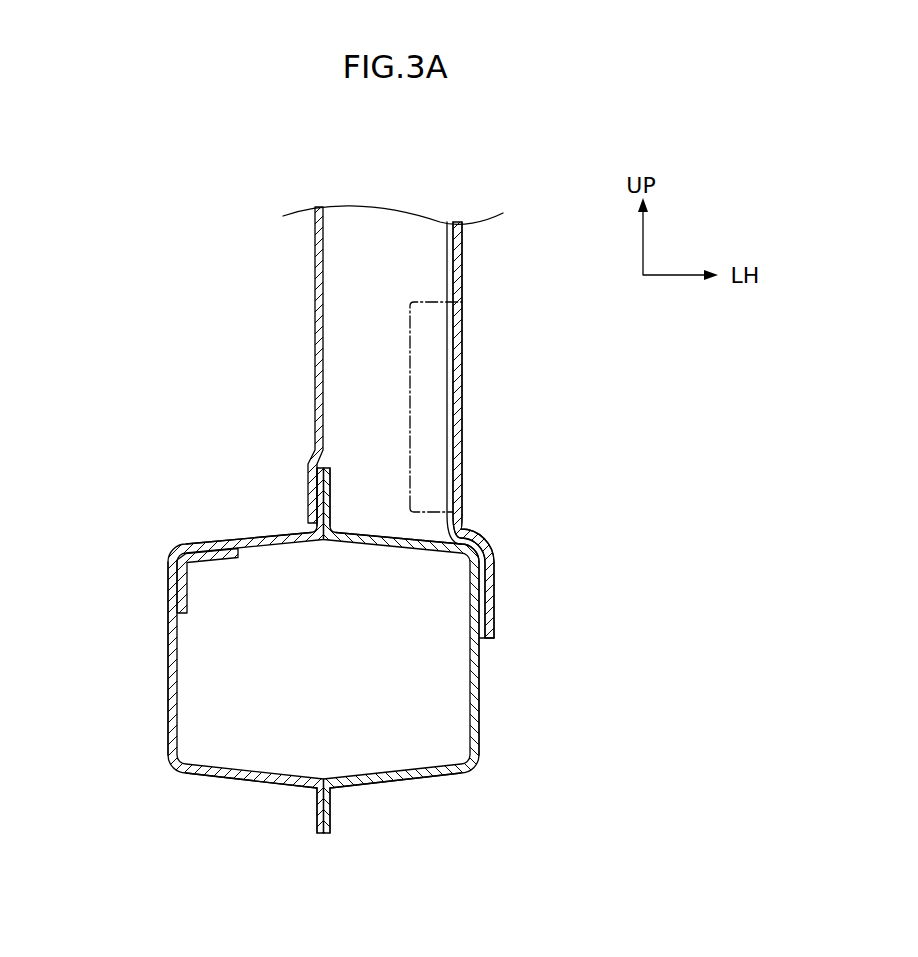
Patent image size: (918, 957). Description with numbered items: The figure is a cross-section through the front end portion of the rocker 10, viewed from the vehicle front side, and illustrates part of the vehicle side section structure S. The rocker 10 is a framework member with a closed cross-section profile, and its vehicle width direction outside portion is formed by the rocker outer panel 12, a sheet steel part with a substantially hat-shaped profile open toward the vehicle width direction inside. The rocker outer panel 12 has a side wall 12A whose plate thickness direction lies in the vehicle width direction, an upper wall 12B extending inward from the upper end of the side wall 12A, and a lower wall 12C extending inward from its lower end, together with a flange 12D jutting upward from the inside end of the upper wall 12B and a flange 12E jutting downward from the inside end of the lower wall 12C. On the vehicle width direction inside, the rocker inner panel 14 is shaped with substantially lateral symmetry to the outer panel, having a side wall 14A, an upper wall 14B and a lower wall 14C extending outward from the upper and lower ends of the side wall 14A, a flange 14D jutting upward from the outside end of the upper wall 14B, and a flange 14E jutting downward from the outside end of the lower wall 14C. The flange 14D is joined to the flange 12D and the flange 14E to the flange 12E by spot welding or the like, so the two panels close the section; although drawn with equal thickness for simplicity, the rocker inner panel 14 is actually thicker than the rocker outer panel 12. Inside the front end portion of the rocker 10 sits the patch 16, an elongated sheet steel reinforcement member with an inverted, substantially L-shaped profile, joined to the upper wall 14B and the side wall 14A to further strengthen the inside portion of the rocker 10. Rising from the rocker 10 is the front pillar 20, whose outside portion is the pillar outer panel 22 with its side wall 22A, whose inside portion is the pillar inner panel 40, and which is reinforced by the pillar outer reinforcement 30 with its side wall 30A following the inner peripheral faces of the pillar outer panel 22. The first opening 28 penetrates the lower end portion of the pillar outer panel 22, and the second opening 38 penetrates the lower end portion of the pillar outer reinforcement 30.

The rocker 10 is at (322, 643).
The rocker outer panel 12 is at (448, 643).
The side wall 12A is at (480, 677).
The upper wall 12B is at (388, 545).
The lower wall 12C is at (415, 773).
The flange 12D is at (335, 497).
The flange 12E is at (333, 808).
The rocker inner panel 14 is at (199, 652).
The side wall 14A is at (168, 648).
The upper wall 14B is at (270, 548).
The lower wall 14C is at (262, 776).
The flange 14D is at (310, 488).
The flange 14E is at (318, 808).
The patch 16 is at (192, 590).
The front pillar 20 is at (411, 200).
The pillar outer panel 22 is at (505, 430).
The side wall 22A is at (466, 258).
The first opening 28 is at (463, 498).
The pillar outer reinforcement 30 is at (421, 430).
The side wall 30A is at (447, 273).
The second opening 38 is at (458, 303).
The pillar inner panel 40 is at (306, 382).
The vehicle side section structure S is at (568, 526).